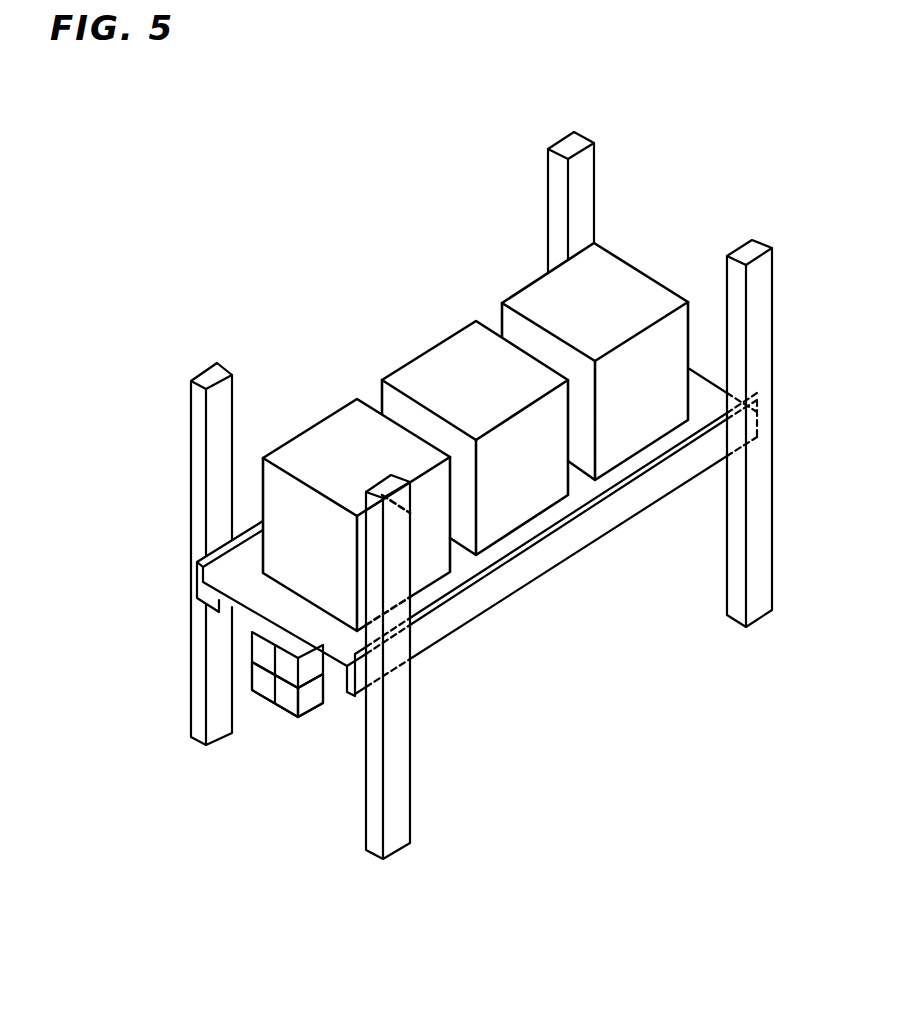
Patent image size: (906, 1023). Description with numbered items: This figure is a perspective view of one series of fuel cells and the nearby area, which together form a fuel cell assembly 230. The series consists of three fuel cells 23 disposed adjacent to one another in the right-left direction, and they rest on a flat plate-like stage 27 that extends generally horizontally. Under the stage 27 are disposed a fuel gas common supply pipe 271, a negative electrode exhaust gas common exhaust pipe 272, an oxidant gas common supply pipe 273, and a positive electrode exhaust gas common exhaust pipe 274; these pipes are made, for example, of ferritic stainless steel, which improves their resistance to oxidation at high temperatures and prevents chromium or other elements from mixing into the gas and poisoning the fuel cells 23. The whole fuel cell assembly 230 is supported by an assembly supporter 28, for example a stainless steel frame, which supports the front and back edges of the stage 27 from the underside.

The fuel cell assembly 230 is at (436, 495).
The fuel cell 23 is at (322, 450).
The stage 27 is at (232, 578).
The assembly supporter 28 is at (550, 553).
The fuel gas common supply pipe 271 is at (262, 650).
The negative electrode exhaust gas common exhaust pipe 272 is at (308, 670).
The oxidant gas common supply pipe 273 is at (262, 686).
The positive electrode exhaust gas common exhaust pipe 274 is at (308, 700).